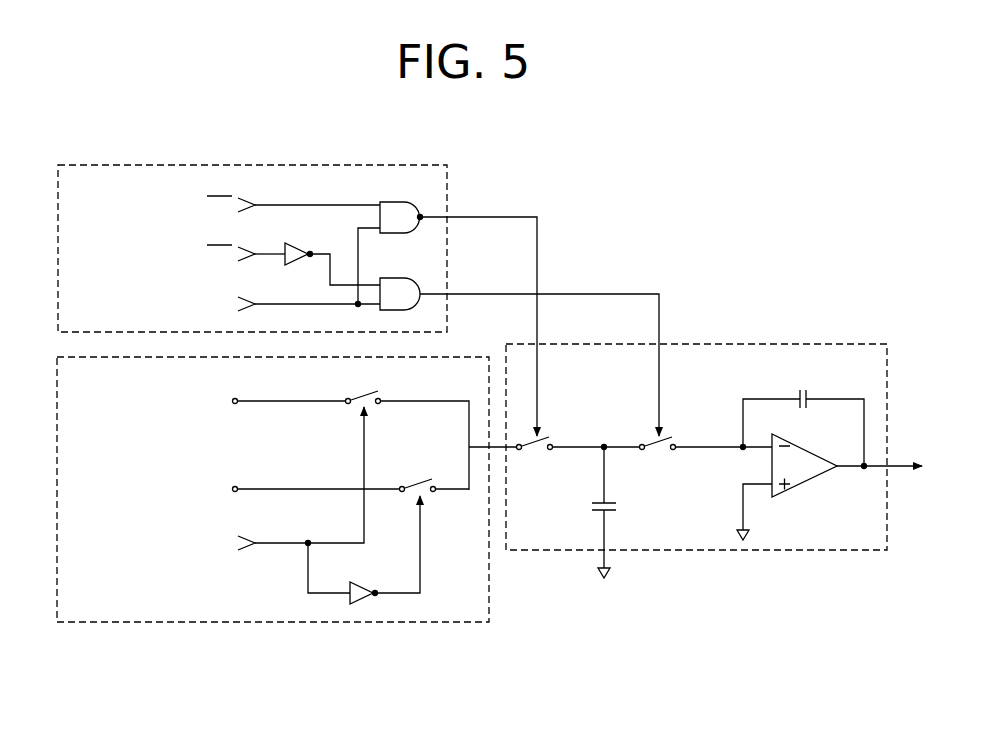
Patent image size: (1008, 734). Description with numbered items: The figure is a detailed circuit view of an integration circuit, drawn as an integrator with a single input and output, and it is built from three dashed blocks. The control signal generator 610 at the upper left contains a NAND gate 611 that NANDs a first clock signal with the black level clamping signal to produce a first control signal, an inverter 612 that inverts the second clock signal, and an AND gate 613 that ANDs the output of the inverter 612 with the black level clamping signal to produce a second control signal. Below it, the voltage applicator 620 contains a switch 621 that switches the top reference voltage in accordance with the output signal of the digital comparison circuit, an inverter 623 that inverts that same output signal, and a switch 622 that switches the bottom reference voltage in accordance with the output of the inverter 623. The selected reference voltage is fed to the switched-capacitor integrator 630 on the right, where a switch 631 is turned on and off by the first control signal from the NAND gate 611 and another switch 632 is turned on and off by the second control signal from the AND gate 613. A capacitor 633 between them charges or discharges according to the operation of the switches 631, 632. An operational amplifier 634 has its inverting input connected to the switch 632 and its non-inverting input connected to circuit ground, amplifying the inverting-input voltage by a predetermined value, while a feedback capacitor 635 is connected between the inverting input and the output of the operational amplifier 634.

The control signal generator 610 is at (303, 164).
The NAND gate 611 is at (453, 307).
The inverter 612 is at (332, 255).
The AND gate 613 is at (517, 345).
The voltage applicator 620 is at (489, 598).
The switch 621 is at (399, 430).
The switch 622 is at (422, 476).
The inverter 623 is at (364, 550).
The switched-capacitor integrator 630 is at (782, 551).
The switch 631 is at (578, 458).
The switch 632 is at (702, 458).
The capacitor 633 is at (621, 512).
The operational amplifier 634 is at (829, 483).
The feedback capacitor 635 is at (803, 416).